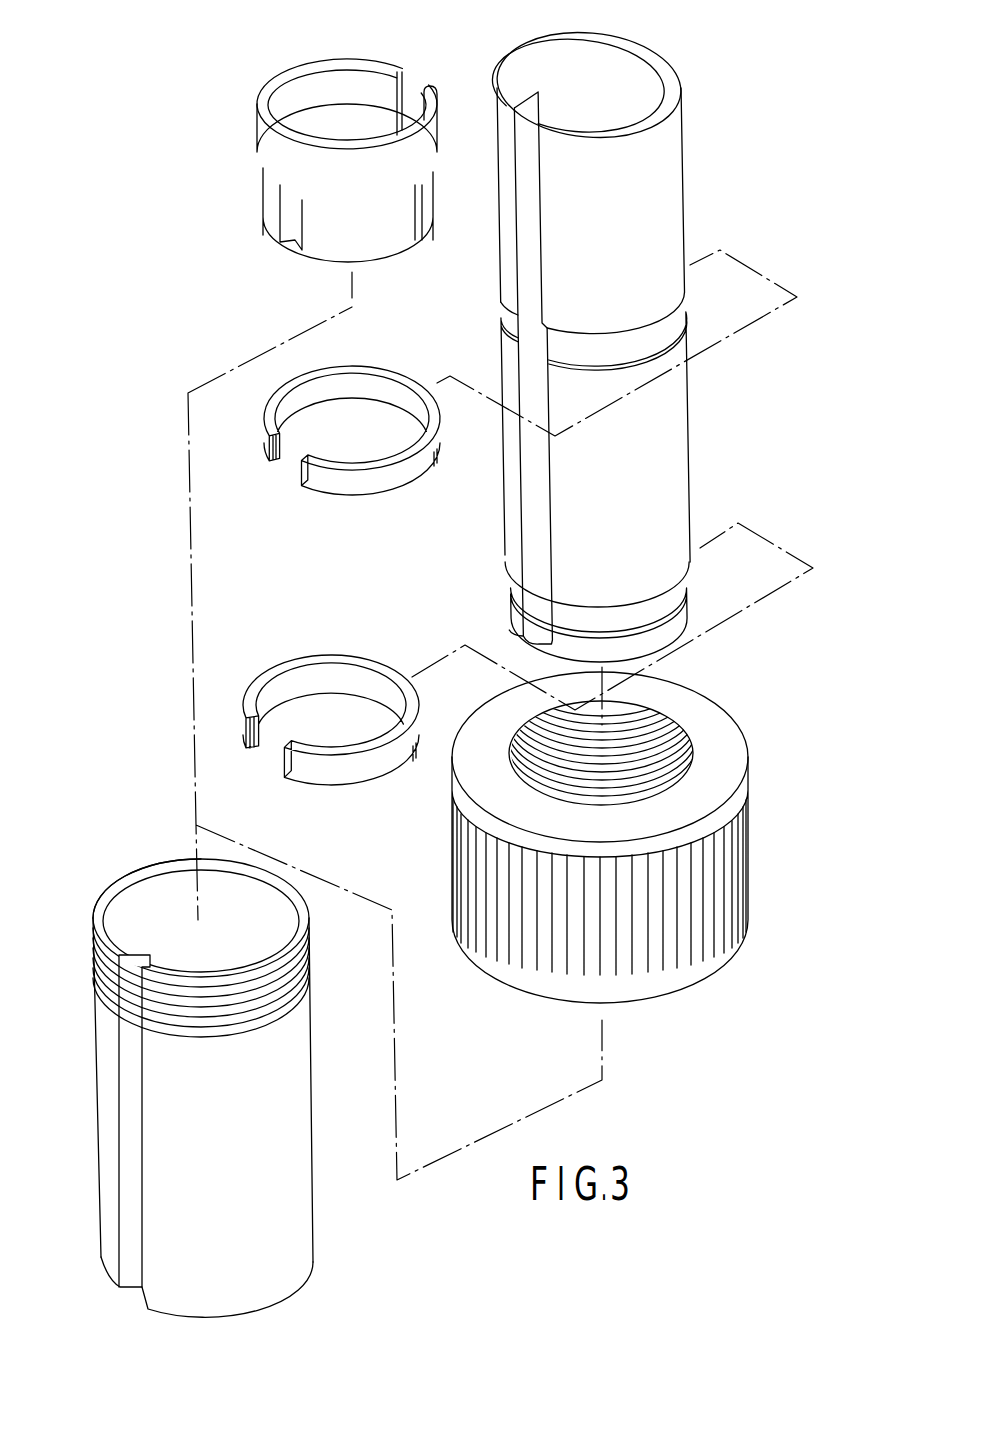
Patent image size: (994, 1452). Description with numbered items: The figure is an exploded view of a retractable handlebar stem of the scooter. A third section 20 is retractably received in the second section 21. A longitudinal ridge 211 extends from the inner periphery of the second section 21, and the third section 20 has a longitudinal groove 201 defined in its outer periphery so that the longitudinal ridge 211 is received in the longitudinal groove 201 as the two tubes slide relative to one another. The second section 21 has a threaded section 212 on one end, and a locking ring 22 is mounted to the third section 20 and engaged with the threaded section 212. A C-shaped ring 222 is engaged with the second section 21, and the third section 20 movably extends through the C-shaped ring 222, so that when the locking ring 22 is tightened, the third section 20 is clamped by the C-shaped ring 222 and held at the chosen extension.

The third section 20 is at (599, 331).
The longitudinal groove 201 is at (532, 133).
The second section 21 is at (199, 1075).
The longitudinal ridge 211 is at (152, 963).
The threaded section 212 is at (92, 942).
The locking ring 22 is at (800, 770).
The C-shaped ring 222 is at (245, 184).